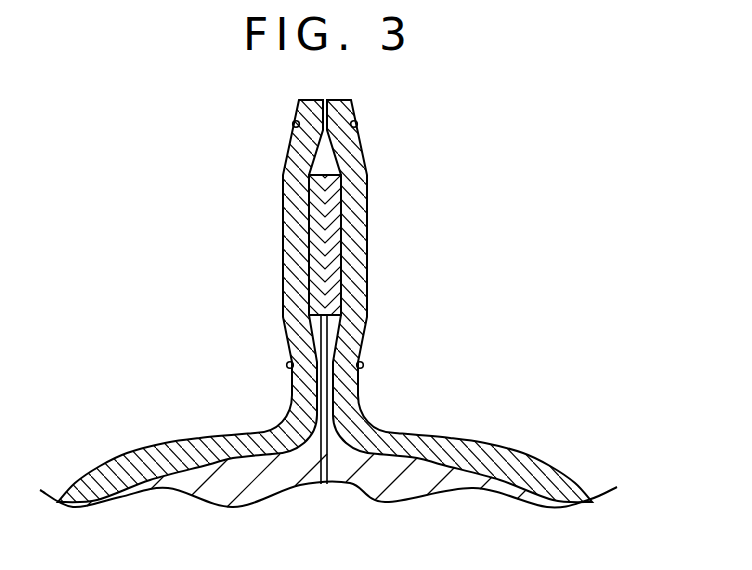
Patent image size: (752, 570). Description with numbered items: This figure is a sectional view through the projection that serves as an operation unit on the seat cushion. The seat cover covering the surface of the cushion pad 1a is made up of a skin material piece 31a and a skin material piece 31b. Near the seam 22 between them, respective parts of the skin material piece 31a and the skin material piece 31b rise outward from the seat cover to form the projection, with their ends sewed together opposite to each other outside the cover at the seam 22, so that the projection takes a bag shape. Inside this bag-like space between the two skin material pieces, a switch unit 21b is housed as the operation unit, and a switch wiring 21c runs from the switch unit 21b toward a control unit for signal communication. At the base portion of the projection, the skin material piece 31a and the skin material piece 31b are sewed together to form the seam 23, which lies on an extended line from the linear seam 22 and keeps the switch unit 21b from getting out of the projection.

The cushion pad 1a is at (416, 485).
The switch unit 21b is at (320, 249).
The switch wiring 21c is at (318, 470).
The seam 22 is at (357, 124).
The seam 23 is at (363, 365).
The skin material piece 31a is at (364, 202).
The skin material piece 31b is at (290, 202).